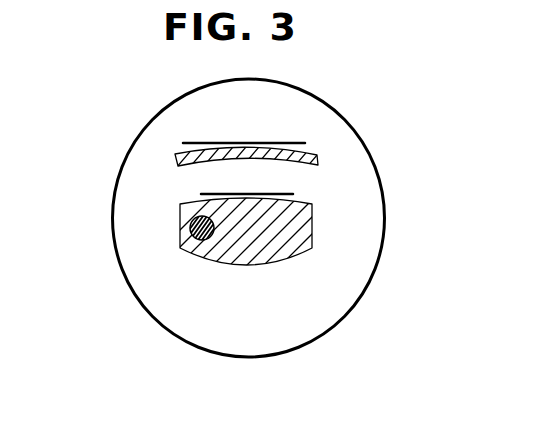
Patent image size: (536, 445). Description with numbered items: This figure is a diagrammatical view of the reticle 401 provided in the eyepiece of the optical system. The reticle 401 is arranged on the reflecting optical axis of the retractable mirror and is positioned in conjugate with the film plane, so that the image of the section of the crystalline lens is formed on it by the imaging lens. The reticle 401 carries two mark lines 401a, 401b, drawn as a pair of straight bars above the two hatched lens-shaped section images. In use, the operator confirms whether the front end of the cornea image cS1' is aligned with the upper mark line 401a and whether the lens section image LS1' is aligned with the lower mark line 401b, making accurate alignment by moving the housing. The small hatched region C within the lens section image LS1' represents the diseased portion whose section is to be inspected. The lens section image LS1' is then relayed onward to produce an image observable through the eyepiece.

The reticle 401 is at (322, 112).
The mark line 401a is at (189, 142).
The mark line 401b is at (211, 193).
The diseased portion C is at (190, 236).
The cornea image cS1' is at (372, 164).
The lens section image LS1' is at (377, 259).